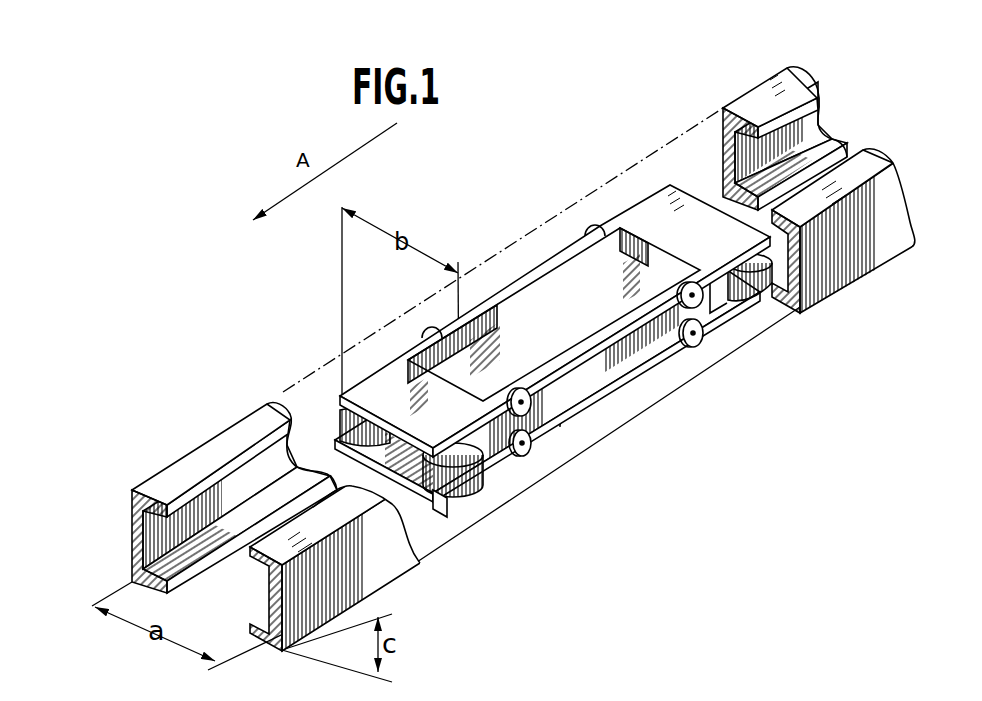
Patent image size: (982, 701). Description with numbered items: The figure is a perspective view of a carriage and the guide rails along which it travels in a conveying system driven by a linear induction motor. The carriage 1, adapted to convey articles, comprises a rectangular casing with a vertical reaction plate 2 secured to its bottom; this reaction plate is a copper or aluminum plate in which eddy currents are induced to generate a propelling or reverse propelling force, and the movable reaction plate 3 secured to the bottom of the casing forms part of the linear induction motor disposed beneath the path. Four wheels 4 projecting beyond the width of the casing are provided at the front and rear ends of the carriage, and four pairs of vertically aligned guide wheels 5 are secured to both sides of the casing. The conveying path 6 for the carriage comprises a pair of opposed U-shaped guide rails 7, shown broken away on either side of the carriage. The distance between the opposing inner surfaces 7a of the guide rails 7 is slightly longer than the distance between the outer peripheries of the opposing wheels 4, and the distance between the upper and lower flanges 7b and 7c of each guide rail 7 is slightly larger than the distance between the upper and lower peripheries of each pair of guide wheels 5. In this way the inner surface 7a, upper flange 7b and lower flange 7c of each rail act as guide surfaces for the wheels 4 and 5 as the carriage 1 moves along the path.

The carriage 1 is at (517, 273).
The reaction plate 2 is at (575, 272).
The reaction plate 3 is at (632, 378).
The wheels 4 is at (338, 420).
The guide wheels 5 is at (703, 298).
The conveying path 6 is at (858, 114).
The guide rail 7 is at (501, 339).
The inner surface 7a is at (143, 545).
The upper flange 7b is at (133, 527).
The lower flange 7c is at (147, 580).